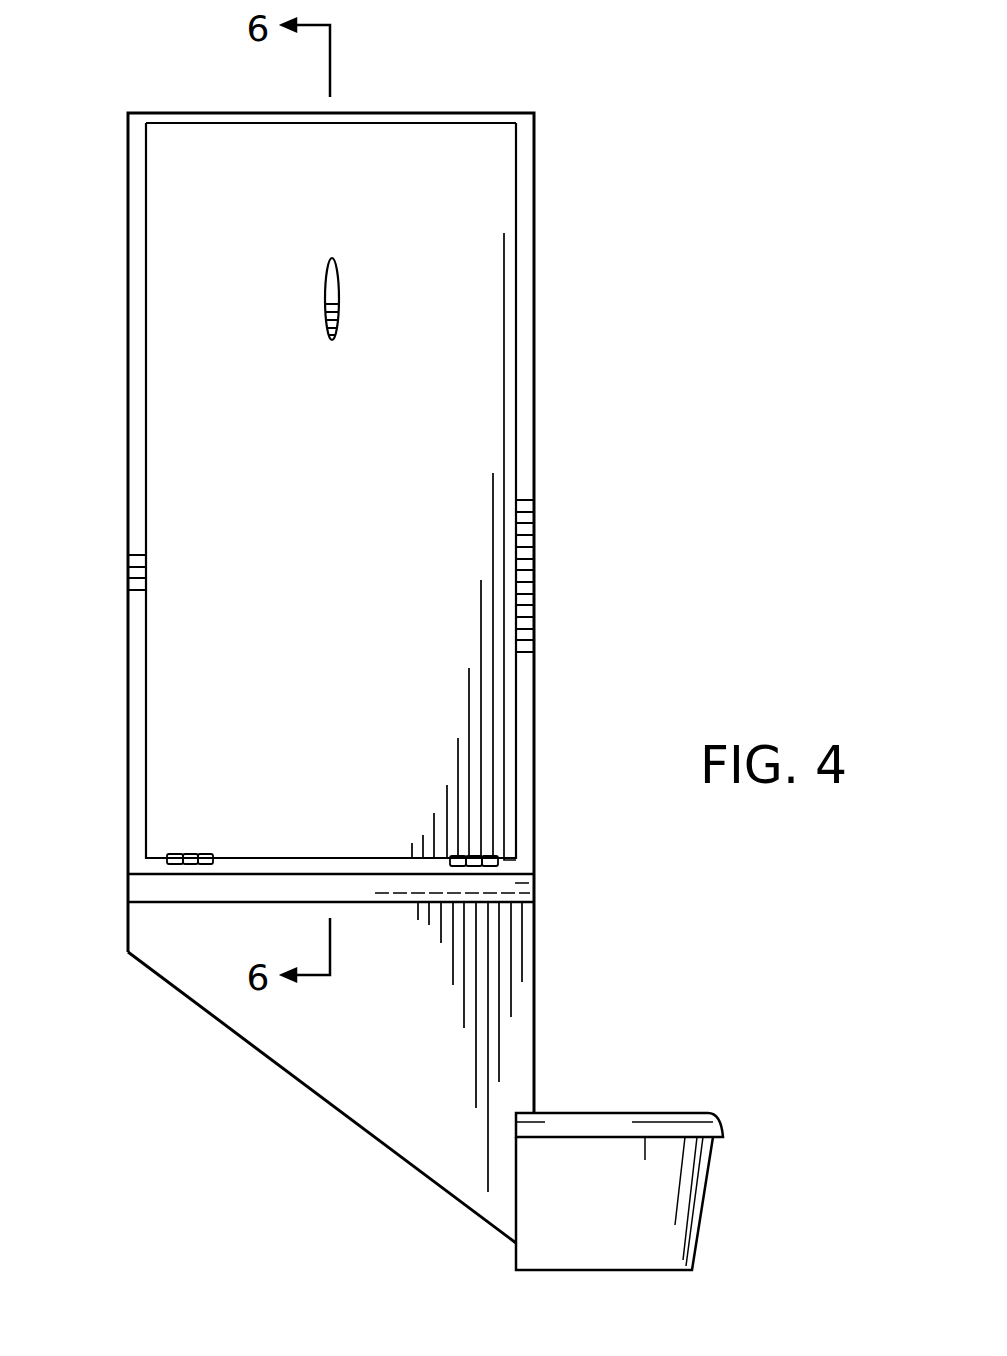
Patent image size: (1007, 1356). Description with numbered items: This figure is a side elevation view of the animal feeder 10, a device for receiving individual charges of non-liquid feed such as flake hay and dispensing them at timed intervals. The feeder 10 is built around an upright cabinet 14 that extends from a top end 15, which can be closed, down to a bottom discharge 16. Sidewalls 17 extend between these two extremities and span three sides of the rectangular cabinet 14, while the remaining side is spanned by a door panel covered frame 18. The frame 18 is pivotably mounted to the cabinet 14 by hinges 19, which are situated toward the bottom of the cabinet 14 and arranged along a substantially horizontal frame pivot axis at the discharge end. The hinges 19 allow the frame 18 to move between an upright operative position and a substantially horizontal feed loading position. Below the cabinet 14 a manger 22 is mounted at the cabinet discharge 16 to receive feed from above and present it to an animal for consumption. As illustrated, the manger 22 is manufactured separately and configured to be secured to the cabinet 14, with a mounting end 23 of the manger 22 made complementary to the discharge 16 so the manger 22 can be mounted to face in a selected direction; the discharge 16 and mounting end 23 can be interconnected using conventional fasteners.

The animal feeder 10 is at (608, 214).
The cabinet 14 is at (535, 427).
The top end 15 is at (440, 113).
The bottom discharge 16 is at (166, 876).
The sidewalls 17 is at (536, 607).
The door panel covered frame 18 is at (454, 303).
The hinges 19 is at (188, 852).
The manger 22 is at (353, 1121).
The mounting end 23 is at (500, 905).